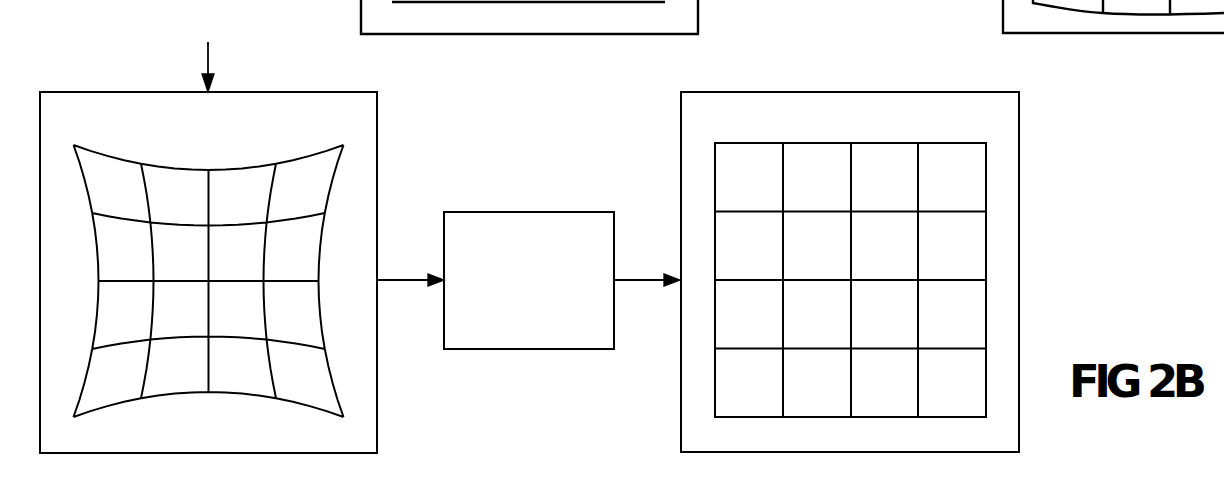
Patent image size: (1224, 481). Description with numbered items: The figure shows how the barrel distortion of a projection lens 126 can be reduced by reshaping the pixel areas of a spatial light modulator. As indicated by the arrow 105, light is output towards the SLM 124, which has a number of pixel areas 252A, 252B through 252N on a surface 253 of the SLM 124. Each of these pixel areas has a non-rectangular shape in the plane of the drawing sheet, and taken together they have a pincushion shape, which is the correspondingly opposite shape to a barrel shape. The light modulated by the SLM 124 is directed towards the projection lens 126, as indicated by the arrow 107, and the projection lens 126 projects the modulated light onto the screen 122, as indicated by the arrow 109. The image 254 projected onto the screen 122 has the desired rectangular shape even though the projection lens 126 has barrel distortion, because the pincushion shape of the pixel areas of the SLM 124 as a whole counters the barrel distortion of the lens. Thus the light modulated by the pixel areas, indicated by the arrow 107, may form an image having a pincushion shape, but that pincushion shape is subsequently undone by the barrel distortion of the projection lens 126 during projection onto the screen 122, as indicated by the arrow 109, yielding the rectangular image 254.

The SLM 124 is at (132, 91).
The arrow 105 is at (213, 72).
The surface 253 is at (222, 260).
The pixel area 252A is at (119, 187).
The pixel area 252B is at (177, 187).
The pixel area 252N is at (295, 375).
The arrow 107 is at (420, 279).
The projection lens 126 is at (529, 280).
The arrow 109 is at (658, 279).
The screen 122 is at (850, 272).
The image 254 is at (842, 142).